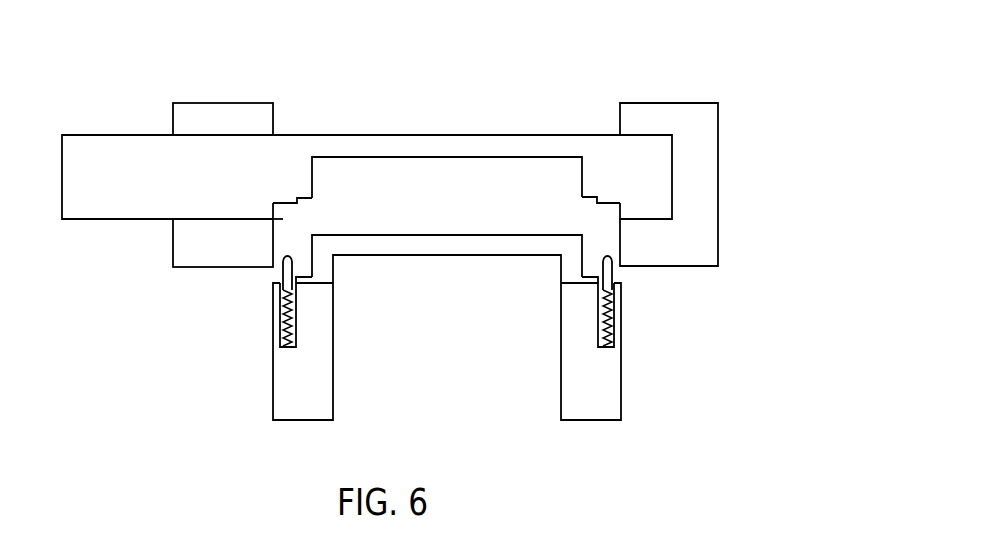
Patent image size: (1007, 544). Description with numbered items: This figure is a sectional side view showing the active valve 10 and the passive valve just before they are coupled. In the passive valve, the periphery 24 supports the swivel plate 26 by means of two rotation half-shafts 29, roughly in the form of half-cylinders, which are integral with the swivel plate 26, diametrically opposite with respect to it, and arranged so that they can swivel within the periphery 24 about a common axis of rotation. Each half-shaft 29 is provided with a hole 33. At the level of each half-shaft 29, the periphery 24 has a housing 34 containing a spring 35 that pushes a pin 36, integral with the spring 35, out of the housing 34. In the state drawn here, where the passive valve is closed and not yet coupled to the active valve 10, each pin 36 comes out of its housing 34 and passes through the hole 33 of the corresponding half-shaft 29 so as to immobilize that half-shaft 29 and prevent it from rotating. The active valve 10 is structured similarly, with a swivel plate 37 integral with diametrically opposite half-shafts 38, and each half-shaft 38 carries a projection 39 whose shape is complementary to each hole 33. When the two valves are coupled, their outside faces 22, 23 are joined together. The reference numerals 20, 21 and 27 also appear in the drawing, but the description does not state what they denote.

The active valve 10 is at (728, 103).
The base member 20 is at (417, 256).
The upper clamping bar 21 is at (440, 133).
The outside face 22 is at (443, 233).
The outside face 23 is at (435, 158).
The periphery 24 is at (610, 395).
The swivel plate 26 is at (508, 247).
The contact surface 27 is at (504, 269).
The rotation half-shaft 29 is at (325, 268).
The hole 33 is at (293, 240).
The housing 34 is at (292, 330).
The spring 35 is at (278, 325).
The pin 36 is at (280, 270).
The swivel plate 37 is at (518, 143).
The half-shaft 38 is at (282, 152).
The projection 39 is at (292, 192).